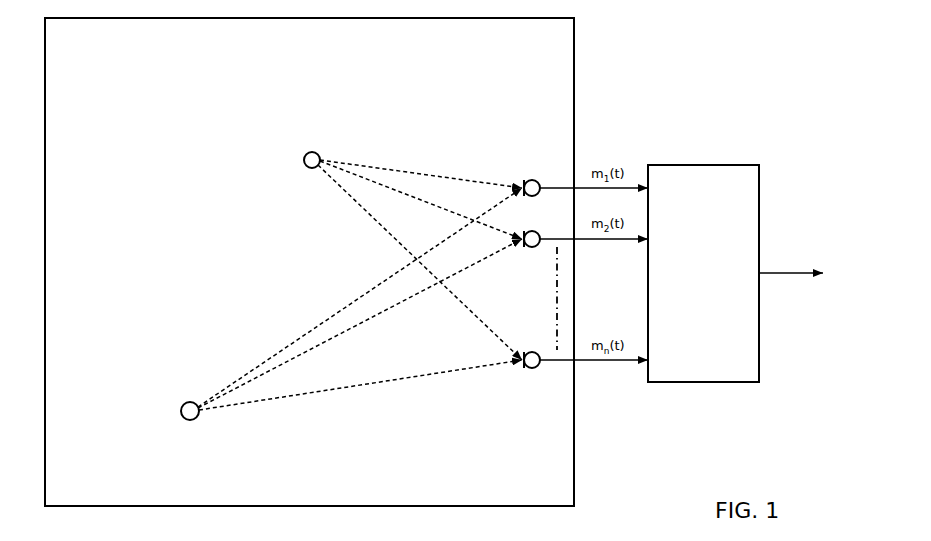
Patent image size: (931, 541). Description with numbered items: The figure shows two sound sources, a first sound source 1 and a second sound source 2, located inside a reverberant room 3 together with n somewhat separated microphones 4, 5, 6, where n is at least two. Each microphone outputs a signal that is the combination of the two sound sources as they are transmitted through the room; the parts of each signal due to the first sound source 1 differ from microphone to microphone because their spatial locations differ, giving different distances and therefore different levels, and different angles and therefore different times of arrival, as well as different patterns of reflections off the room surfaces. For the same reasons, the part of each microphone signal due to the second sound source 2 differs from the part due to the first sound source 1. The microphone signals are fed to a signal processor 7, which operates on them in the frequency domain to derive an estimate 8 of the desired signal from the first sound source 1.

The first sound source 1 is at (318, 153).
The second sound source 2 is at (196, 418).
The reverberant room 3 is at (569, 458).
The microphone 4 is at (532, 180).
The microphone 5 is at (532, 231).
The microphone 6 is at (532, 352).
The signal processor 7 is at (727, 377).
The estimate of desired signal 8 is at (799, 269).